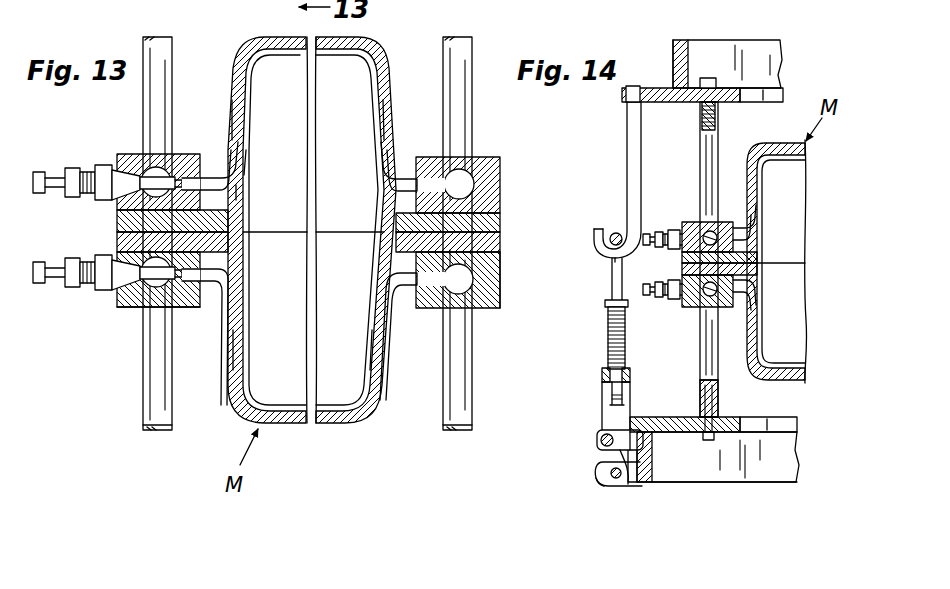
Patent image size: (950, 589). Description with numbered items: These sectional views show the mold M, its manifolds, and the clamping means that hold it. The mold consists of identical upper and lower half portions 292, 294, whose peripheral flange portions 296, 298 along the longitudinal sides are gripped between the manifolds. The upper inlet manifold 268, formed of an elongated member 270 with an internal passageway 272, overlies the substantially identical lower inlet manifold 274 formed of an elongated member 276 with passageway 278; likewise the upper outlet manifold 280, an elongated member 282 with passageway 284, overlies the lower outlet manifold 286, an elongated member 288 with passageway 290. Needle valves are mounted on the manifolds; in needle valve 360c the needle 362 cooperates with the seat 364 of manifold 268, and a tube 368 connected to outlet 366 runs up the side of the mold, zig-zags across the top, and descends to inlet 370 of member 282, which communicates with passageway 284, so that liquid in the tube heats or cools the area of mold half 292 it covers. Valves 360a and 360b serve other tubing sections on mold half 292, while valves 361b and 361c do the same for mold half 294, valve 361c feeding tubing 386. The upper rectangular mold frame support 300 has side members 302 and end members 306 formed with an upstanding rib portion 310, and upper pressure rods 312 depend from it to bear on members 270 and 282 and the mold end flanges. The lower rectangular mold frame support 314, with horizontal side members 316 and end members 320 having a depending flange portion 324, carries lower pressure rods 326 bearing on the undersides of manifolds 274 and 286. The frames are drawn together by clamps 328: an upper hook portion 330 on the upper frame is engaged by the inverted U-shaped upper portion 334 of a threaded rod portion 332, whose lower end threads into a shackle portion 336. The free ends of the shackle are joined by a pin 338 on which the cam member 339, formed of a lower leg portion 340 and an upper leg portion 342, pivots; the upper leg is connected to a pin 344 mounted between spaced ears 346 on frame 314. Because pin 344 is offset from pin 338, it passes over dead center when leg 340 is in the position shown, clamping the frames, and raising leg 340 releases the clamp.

In FIG. 13, the upper inlet manifold 268 is at (127, 151).
In FIG. 14, the upper inlet manifold 268 is at (736, 224).
In FIG. 13, the elongated member 270 is at (120, 153).
In FIG. 14, the elongated member 270 is at (683, 222).
In FIG. 13, the internal passageway 272 is at (162, 167).
In FIG. 14, the internal passageway 272 is at (738, 236).
In FIG. 13, the lower inlet manifold 274 is at (117, 314).
In FIG. 14, the lower inlet manifold 274 is at (737, 306).
In FIG. 13, the elongated member 276 is at (133, 312).
In FIG. 14, the elongated member 276 is at (690, 308).
In FIG. 13, the internal passageway 278 is at (172, 292).
In FIG. 14, the internal passageway 278 is at (702, 310).
In FIG. 13, the upper outlet manifold 280 is at (506, 188).
In FIG. 13, the elongated member 282 is at (502, 165).
In FIG. 13, the internal passageway 284 is at (461, 172).
In FIG. 13, the lower outlet manifold 286 is at (506, 282).
In FIG. 13, the elongated member 288 is at (503, 303).
In FIG. 13, the internal passageway 290 is at (466, 300).
In FIG. 13, the upper mold half portion 292 is at (374, 47).
In FIG. 14, the upper mold half portion 292 is at (809, 177).
In FIG. 13, the lower mold half portion 294 is at (291, 428).
In FIG. 14, the lower mold half portion 294 is at (809, 341).
In FIG. 13, the peripheral flange portion 296 is at (117, 218).
In FIG. 14, the peripheral flange portion 296 is at (682, 260).
In FIG. 13, the peripheral flange portion 298 is at (117, 244).
In FIG. 14, the peripheral flange portion 298 is at (682, 270).
In FIG. 14, the upper rectangular mold frame support 300 is at (783, 44).
In FIG. 14, the side member 302 is at (660, 88).
In FIG. 14, the end member 306 is at (781, 97).
In FIG. 14, the upstanding rib portion 310 is at (690, 48).
In FIG. 13, the upper pressure rod 312 is at (172, 62).
In FIG. 14, the upper pressure rod 312 is at (719, 143).
In FIG. 14, the lower rectangular mold frame support 314 is at (786, 485).
In FIG. 14, the horizontal side member 316 is at (676, 418).
In FIG. 14, the horizontal end member 320 is at (790, 426).
In FIG. 14, the depending flange portion 324 is at (672, 483).
In FIG. 13, the lower pressure rod 326 is at (143, 420).
In FIG. 14, the lower pressure rod 326 is at (720, 386).
In FIG. 14, the clamp 328 is at (605, 355).
In FIG. 14, the upper hook portion 330 is at (627, 112).
In FIG. 14, the lower threaded rod portion 332 is at (603, 372).
In FIG. 14, the inverted U-shaped upper portion 334 is at (605, 256).
In FIG. 14, the shackle portion 336 is at (602, 410).
In FIG. 14, the pin 338 is at (622, 490).
In FIG. 14, the cam member 339 is at (597, 480).
In FIG. 14, the lower leg portion 340 is at (612, 488).
In FIG. 14, the upper leg portion 342 is at (600, 455).
In FIG. 14, the pin 344 is at (599, 440).
In FIG. 14, the spaced ears 346 is at (631, 444).
In FIG. 13, the end needle valve 360a is at (316, 8).
In FIG. 13, the needle valve 360b is at (177, 8).
In FIG. 14, the needle valve 360b is at (658, 238).
In FIG. 13, the needle valve 360c is at (103, 168).
In FIG. 14, the needle valve 361b is at (660, 296).
In FIG. 13, the needle valve 361c is at (95, 302).
In FIG. 13, the needle 362 is at (200, 199).
In FIG. 13, the seat 364 is at (237, 190).
In FIG. 13, the outlet 366 is at (197, 169).
In FIG. 13, the tube 368 is at (234, 120).
In FIG. 13, the inlet 370 is at (385, 205).
In FIG. 13, the tubing 386 is at (235, 353).